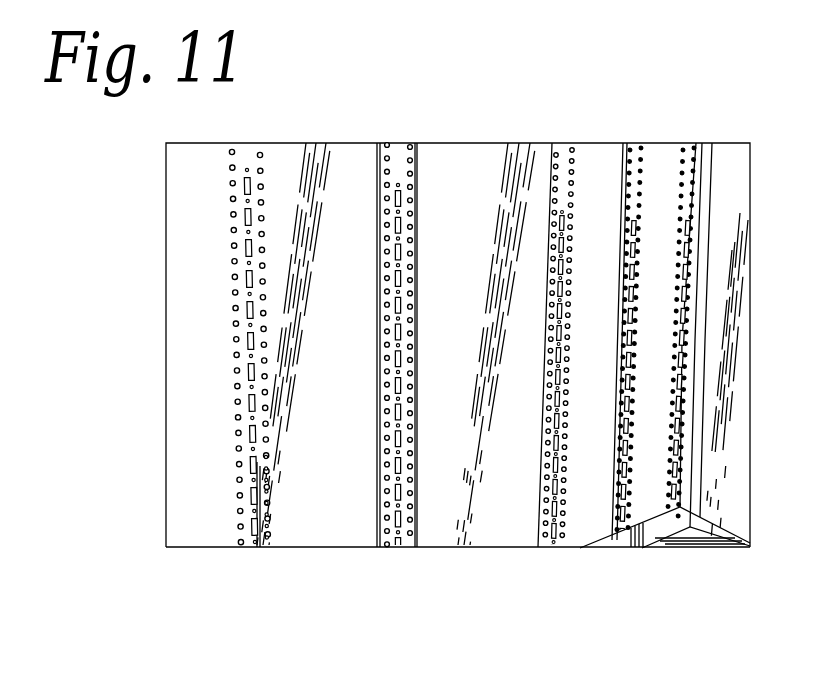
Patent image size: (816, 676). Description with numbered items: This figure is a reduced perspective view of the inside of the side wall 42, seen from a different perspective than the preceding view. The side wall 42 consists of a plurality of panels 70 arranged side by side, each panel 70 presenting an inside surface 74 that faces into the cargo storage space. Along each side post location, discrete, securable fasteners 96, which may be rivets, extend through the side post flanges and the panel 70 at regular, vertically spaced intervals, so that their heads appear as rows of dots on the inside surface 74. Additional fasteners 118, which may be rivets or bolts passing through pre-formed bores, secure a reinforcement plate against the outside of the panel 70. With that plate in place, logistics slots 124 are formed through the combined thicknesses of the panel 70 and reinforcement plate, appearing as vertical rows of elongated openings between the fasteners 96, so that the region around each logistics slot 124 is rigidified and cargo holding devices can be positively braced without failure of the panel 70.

The side wall 42 is at (465, 156).
The panel 70 is at (353, 162).
The inside surface 74 is at (323, 532).
The fasteners 96 is at (238, 419).
The fasteners 118 is at (247, 265).
The logistics slots 124 is at (624, 234).